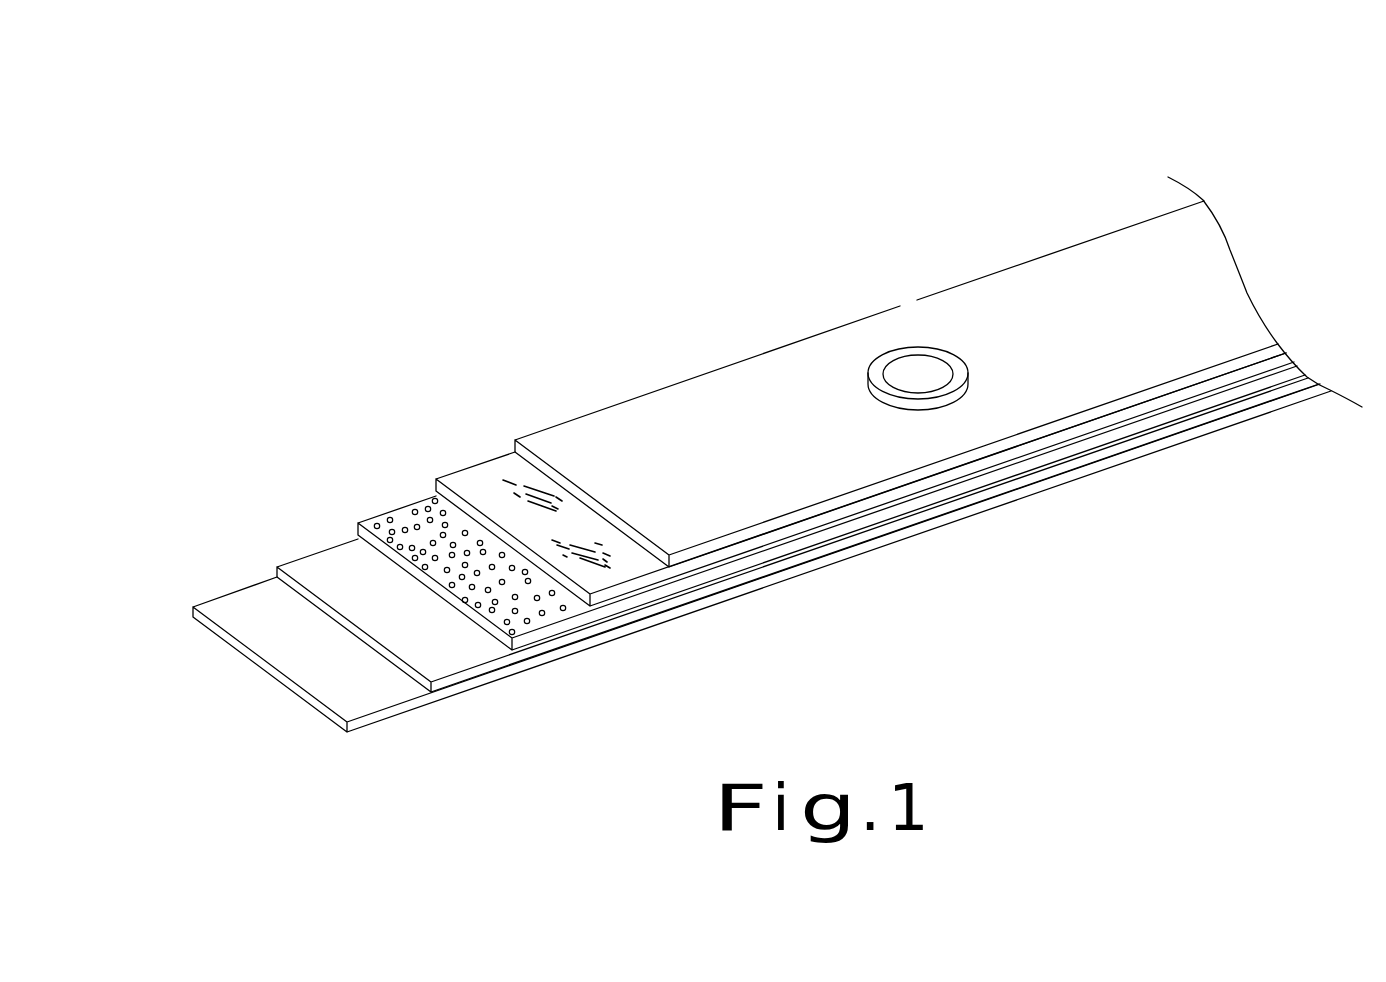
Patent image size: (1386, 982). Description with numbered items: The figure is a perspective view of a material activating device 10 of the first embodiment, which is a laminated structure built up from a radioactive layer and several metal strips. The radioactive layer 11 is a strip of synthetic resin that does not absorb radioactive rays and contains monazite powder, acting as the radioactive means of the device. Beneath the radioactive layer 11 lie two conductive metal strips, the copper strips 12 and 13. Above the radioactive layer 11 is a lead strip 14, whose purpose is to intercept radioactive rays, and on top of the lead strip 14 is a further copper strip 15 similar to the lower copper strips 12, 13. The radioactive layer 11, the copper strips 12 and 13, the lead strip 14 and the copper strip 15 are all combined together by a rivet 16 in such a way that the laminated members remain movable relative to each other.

The material activating device 10 is at (371, 178).
The radioactive layer 11 is at (402, 532).
The copper strip 12 is at (323, 578).
The copper strip 13 is at (250, 618).
The lead strip 14 is at (493, 488).
The copper strip 15 is at (595, 445).
The rivet 16 is at (923, 368).